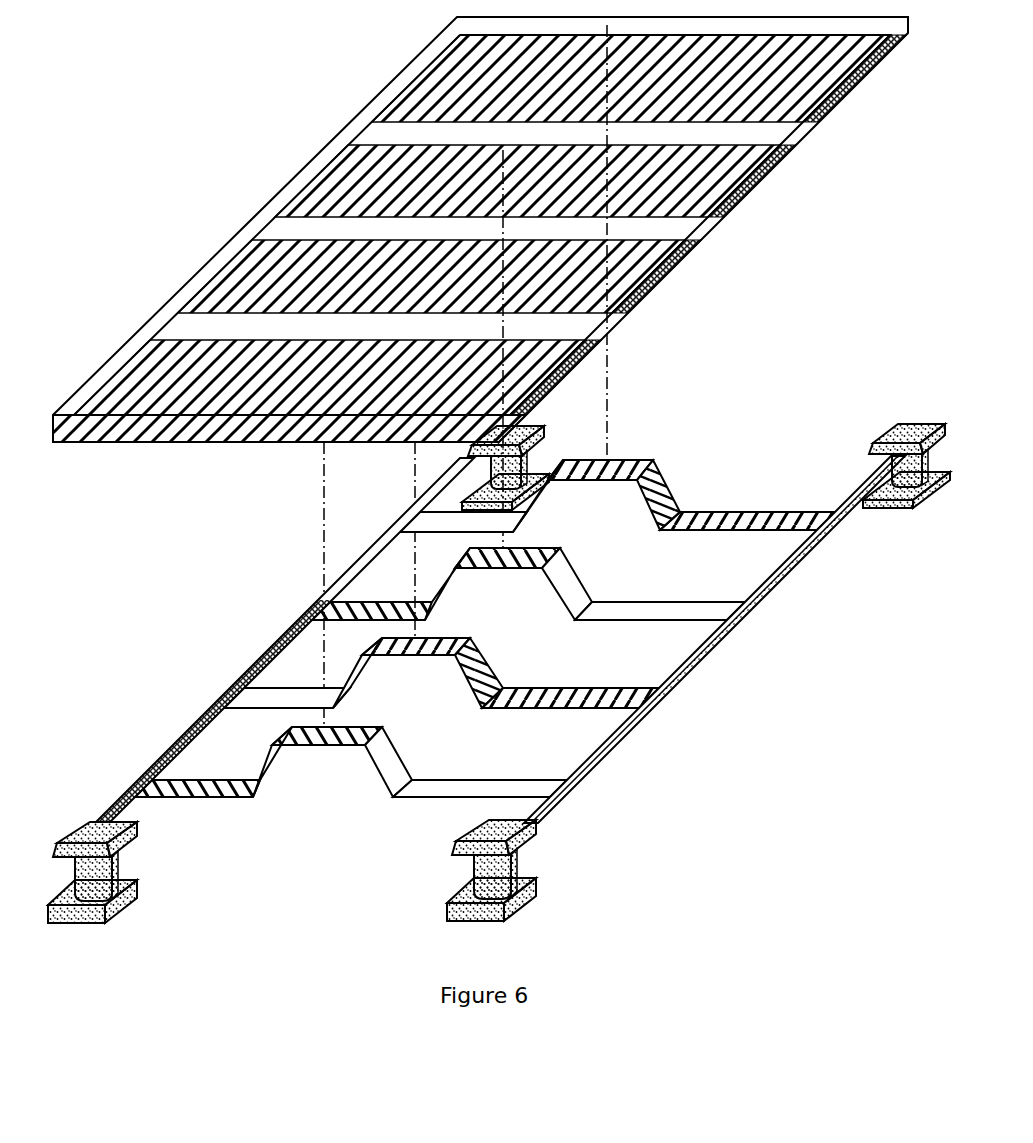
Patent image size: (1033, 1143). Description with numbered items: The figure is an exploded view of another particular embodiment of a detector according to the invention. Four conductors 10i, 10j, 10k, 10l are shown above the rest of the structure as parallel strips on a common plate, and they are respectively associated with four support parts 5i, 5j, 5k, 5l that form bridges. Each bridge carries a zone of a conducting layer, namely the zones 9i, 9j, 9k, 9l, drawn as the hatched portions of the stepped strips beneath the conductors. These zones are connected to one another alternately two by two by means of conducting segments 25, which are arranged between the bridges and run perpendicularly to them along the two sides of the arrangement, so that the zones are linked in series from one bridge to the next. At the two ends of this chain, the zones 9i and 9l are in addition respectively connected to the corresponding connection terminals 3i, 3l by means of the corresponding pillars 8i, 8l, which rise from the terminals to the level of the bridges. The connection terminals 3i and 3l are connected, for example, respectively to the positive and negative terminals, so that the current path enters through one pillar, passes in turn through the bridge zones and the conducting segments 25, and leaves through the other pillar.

The conductor 10i is at (563, 383).
The conductor 10j is at (647, 300).
The conductor 10k is at (760, 187).
The conductor 10l is at (845, 102).
The support part 5i is at (395, 747).
The support part 5j is at (485, 650).
The support part 5k is at (577, 572).
The support part 5l is at (667, 478).
The zone of conducting layer 9i is at (217, 780).
The zone of conducting layer 9j is at (590, 688).
The zone of conducting layer 9k is at (383, 602).
The zone of conducting layer 9l is at (747, 513).
The conducting segment 25 is at (797, 575).
The pillar 8i is at (112, 873).
The pillar 8l is at (875, 440).
The connection terminal 3i is at (125, 900).
The connection terminal 3l is at (905, 510).